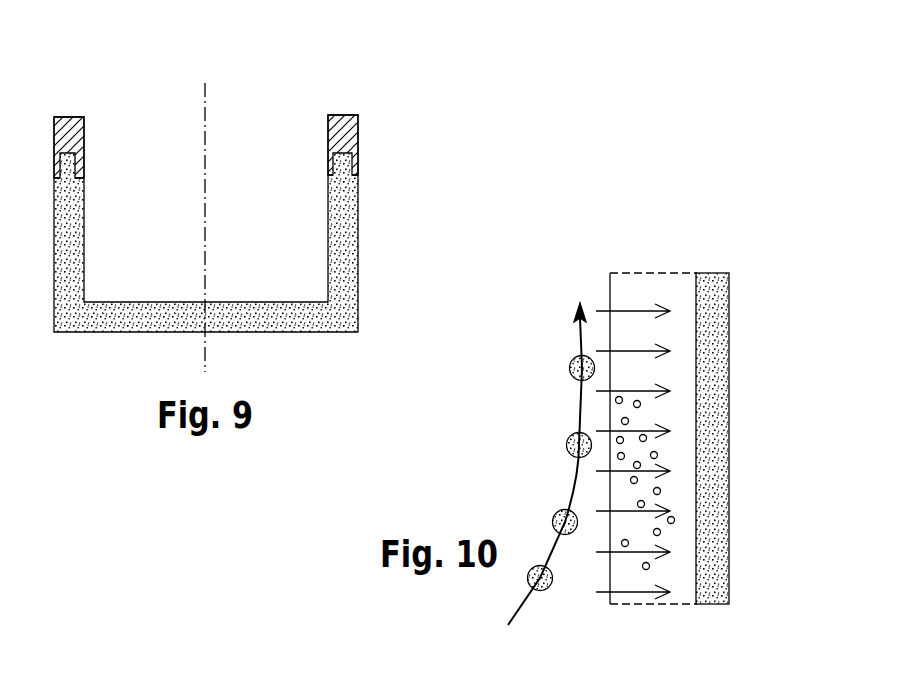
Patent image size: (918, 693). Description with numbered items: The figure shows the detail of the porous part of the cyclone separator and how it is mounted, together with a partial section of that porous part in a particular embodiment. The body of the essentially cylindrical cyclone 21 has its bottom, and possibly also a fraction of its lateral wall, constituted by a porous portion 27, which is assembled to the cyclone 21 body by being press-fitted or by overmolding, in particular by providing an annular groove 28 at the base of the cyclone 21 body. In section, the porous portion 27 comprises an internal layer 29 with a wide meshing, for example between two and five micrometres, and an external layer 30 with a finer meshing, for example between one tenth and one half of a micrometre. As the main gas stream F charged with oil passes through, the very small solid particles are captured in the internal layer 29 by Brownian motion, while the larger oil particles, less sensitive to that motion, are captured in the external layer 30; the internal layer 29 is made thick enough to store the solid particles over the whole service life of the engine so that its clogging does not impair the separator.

In FIG. 9, the cyclone 21 is at (372, 143).
In FIG. 9, the porous portion 27 is at (350, 243).
In FIG. 10, the porous portion 27 is at (740, 358).
In FIG. 9, the annular groove 28 is at (66, 150).
In FIG. 10, the internal layer 29 is at (660, 570).
In FIG. 10, the external layer 30 is at (712, 492).
In FIG. 10, the main gas stream F is at (572, 471).